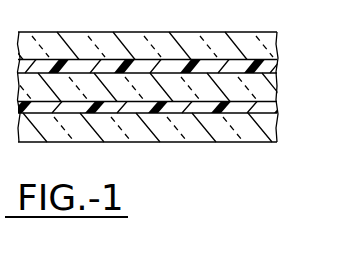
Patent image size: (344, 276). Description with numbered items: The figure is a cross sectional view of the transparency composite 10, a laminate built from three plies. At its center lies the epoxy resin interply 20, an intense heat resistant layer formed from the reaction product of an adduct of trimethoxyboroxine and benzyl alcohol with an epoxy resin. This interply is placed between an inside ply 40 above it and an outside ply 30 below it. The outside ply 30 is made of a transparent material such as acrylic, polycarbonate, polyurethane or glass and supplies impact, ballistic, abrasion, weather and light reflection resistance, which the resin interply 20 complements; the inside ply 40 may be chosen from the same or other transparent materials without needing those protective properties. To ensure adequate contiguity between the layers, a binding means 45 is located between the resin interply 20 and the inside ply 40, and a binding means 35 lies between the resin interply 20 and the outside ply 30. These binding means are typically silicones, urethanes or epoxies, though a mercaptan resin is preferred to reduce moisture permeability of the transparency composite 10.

The transparency composite 10 is at (275, 25).
The inside ply 40 is at (278, 42).
The binding means 45 is at (278, 66).
The epoxy resin interply 20 is at (278, 88).
The binding means 35 is at (278, 108).
The outside ply 30 is at (278, 132).